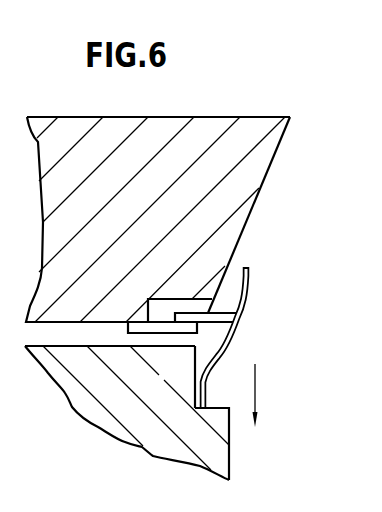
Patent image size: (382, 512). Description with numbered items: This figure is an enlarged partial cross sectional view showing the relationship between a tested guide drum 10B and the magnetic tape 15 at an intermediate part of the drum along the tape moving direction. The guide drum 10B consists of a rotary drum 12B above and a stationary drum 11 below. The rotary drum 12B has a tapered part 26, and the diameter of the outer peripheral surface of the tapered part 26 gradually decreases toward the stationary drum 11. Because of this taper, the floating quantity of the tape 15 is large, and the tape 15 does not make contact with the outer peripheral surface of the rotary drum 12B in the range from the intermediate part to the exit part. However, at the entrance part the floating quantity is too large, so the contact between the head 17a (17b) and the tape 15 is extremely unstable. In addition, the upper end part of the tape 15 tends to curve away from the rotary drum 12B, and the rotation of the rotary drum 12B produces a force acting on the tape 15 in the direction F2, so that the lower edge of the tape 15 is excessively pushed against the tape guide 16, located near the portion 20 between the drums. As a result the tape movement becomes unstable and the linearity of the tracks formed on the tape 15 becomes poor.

The guide drum 10B is at (207, 114).
The rotary drum 12B is at (126, 127).
The tapered part 26 is at (258, 191).
The magnetic tape 15 is at (248, 287).
The head 17a is at (227, 319).
The head 17b is at (207, 334).
The corner portion 20 is at (195, 373).
The tape guide 16 is at (216, 407).
The stationary drum 11 is at (204, 453).
The force direction F2 is at (267, 393).